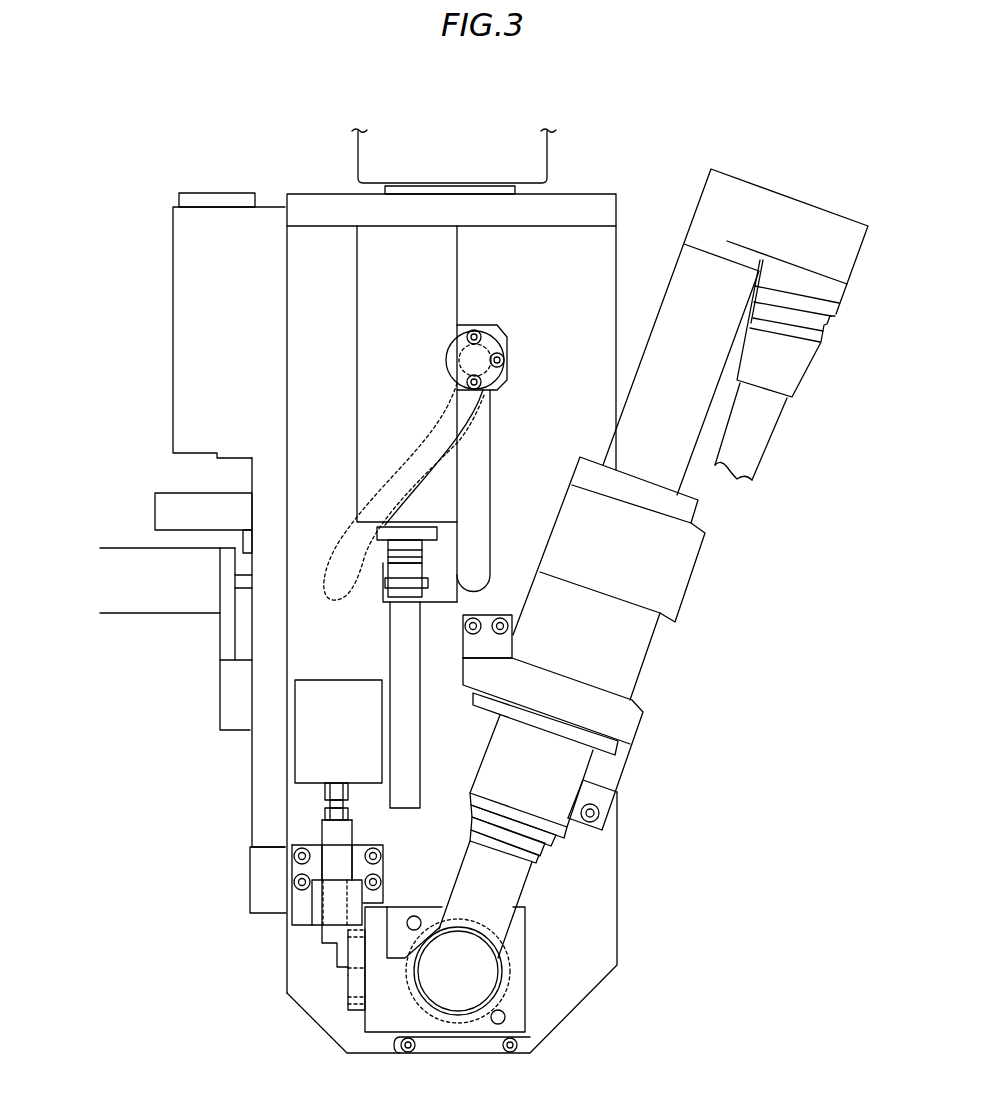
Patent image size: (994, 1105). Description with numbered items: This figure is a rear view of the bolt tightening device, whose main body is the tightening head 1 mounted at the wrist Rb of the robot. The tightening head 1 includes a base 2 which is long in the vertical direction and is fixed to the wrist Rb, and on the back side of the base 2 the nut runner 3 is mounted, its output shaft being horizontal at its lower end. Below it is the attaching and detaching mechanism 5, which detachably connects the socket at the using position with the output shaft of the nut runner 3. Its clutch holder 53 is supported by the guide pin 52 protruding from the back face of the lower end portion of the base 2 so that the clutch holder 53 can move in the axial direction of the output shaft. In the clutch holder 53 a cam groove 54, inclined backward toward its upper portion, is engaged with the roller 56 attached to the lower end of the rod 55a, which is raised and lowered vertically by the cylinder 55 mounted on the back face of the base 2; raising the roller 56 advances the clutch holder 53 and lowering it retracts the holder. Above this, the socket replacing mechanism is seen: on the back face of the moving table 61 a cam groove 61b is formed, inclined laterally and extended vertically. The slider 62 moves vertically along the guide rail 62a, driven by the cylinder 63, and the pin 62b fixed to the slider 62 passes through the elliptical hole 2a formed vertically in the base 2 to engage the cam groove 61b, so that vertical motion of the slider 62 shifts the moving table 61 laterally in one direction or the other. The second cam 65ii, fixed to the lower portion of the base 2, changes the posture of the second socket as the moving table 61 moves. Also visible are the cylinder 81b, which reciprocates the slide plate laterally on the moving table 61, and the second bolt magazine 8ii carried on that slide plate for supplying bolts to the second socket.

The tightening head 1 is at (618, 183).
The base 2 is at (616, 244).
The elliptical hole 2a is at (490, 434).
The nut runner 3 is at (767, 190).
The attaching and detaching mechanism 5 is at (310, 957).
The guide pin 52 is at (415, 915).
The clutch holder 53 is at (526, 940).
The cam groove 54 is at (348, 995).
The cylinder 55 is at (340, 680).
The rod 55a is at (352, 822).
The roller 56 is at (348, 975).
The moving table 61 is at (251, 780).
The cam groove 61b is at (471, 420).
The slider 62 is at (420, 603).
The guide rail 62a is at (422, 723).
The pin 62b is at (508, 338).
The cylinder 63 is at (357, 386).
The second cam 65ii is at (250, 886).
The second bolt magazine 8ii is at (160, 492).
The cylinder 81b is at (160, 614).
The wrist Rb is at (548, 145).